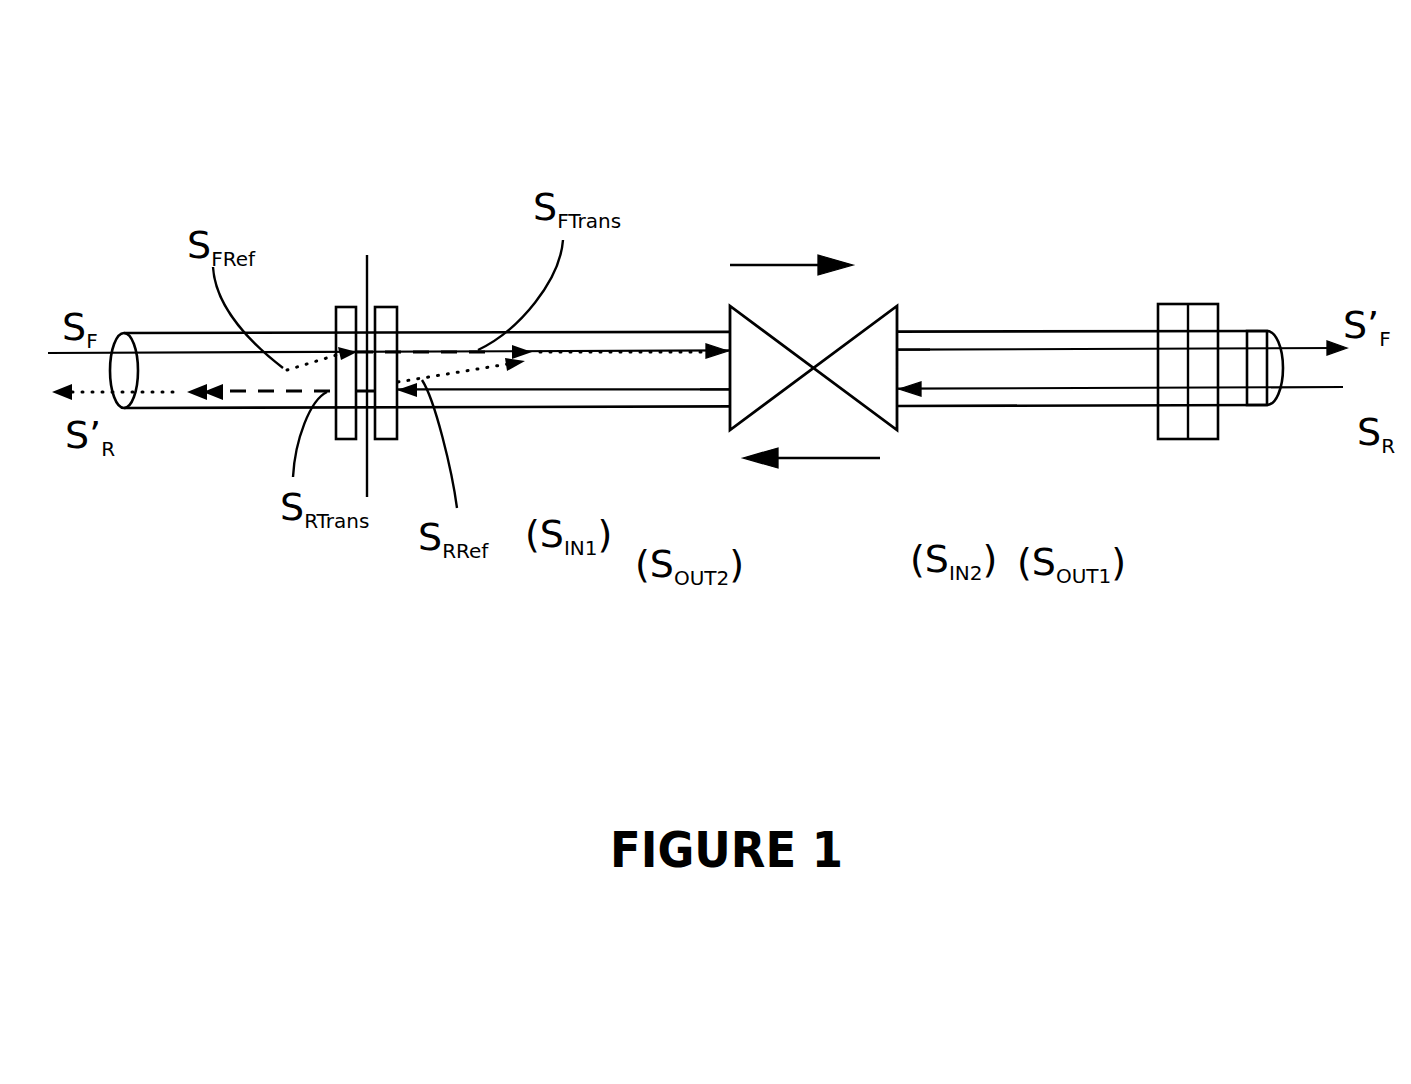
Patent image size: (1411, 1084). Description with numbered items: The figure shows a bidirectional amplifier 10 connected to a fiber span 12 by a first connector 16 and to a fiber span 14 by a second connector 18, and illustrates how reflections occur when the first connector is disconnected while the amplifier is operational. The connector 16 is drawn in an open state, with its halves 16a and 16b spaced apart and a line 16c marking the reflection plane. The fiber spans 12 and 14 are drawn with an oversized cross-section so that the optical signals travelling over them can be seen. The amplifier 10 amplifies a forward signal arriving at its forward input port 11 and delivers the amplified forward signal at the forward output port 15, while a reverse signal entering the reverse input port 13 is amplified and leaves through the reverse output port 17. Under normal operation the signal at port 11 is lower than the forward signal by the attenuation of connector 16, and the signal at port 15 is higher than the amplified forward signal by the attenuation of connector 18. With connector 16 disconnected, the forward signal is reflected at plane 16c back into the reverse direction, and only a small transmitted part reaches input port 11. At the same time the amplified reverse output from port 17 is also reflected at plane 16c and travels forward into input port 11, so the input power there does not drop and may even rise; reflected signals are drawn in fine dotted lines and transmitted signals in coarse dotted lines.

The bidirectional amplifier 10 is at (865, 320).
The forward input port 11 is at (712, 351).
The fiber span 12 is at (193, 332).
The reverse input port 13 is at (915, 390).
The fiber span 14 is at (1237, 408).
The forward output port 15 is at (903, 350).
The first connector 16 is at (357, 291).
The connector half 16a is at (335, 317).
The connector half 16b is at (397, 315).
The reflection plane 16c is at (368, 268).
The reverse output port 17 is at (727, 391).
The second connector 18 is at (1205, 303).